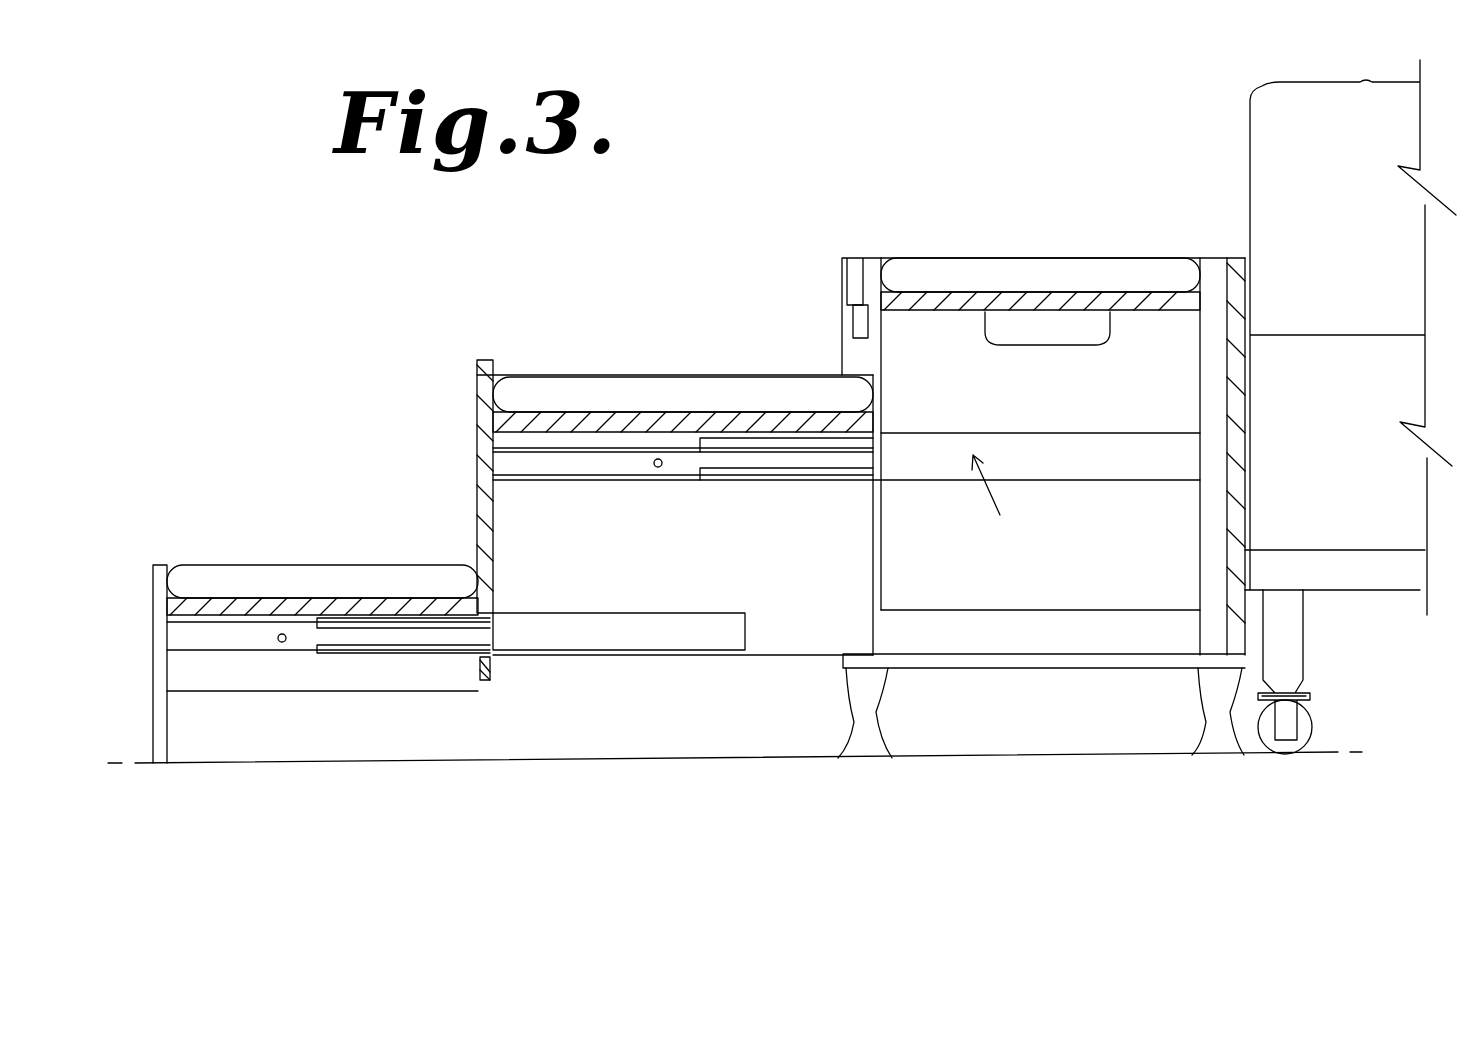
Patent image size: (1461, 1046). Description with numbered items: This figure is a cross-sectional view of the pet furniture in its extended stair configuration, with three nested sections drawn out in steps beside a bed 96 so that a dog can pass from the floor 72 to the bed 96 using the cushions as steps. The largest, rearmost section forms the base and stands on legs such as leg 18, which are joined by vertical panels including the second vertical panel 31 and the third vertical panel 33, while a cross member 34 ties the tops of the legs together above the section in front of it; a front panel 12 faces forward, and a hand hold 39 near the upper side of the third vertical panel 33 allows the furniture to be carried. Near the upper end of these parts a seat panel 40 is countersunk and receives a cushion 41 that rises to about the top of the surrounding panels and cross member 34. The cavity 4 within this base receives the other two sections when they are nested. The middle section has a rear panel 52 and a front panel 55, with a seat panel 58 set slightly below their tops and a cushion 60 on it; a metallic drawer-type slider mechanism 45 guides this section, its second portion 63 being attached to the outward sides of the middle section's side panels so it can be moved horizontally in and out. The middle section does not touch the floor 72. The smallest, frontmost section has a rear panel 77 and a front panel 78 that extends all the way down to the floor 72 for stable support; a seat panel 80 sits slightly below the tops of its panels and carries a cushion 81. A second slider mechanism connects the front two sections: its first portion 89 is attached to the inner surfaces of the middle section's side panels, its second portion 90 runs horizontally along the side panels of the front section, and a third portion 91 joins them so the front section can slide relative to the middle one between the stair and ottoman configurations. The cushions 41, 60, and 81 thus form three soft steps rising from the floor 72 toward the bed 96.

The cavity 4 is at (905, 597).
The front panel 12 is at (842, 338).
The leg 18 is at (1200, 565).
The second vertical panel 31 is at (1235, 422).
The third vertical panel 33 is at (905, 547).
The cross member 34 is at (842, 277).
The hand hold 39 is at (1052, 348).
The seat panel 40 is at (913, 312).
The cushion 41 is at (925, 258).
The slider mechanism 45 is at (1036, 521).
The rear panel 52 is at (873, 522).
The front panel 55 is at (493, 505).
The seat panel 58 is at (663, 433).
The cushion 60 is at (618, 375).
The second portion 63 is at (600, 445).
The floor 72 is at (760, 742).
The rear panel 77 is at (495, 592).
The front panel 78 is at (155, 597).
The seat panel 80 is at (238, 597).
The cushion 81 is at (355, 562).
The first portion 89 is at (487, 665).
The second portion 90 is at (413, 650).
The third portion 91 is at (235, 645).
The bed 96 is at (1248, 148).